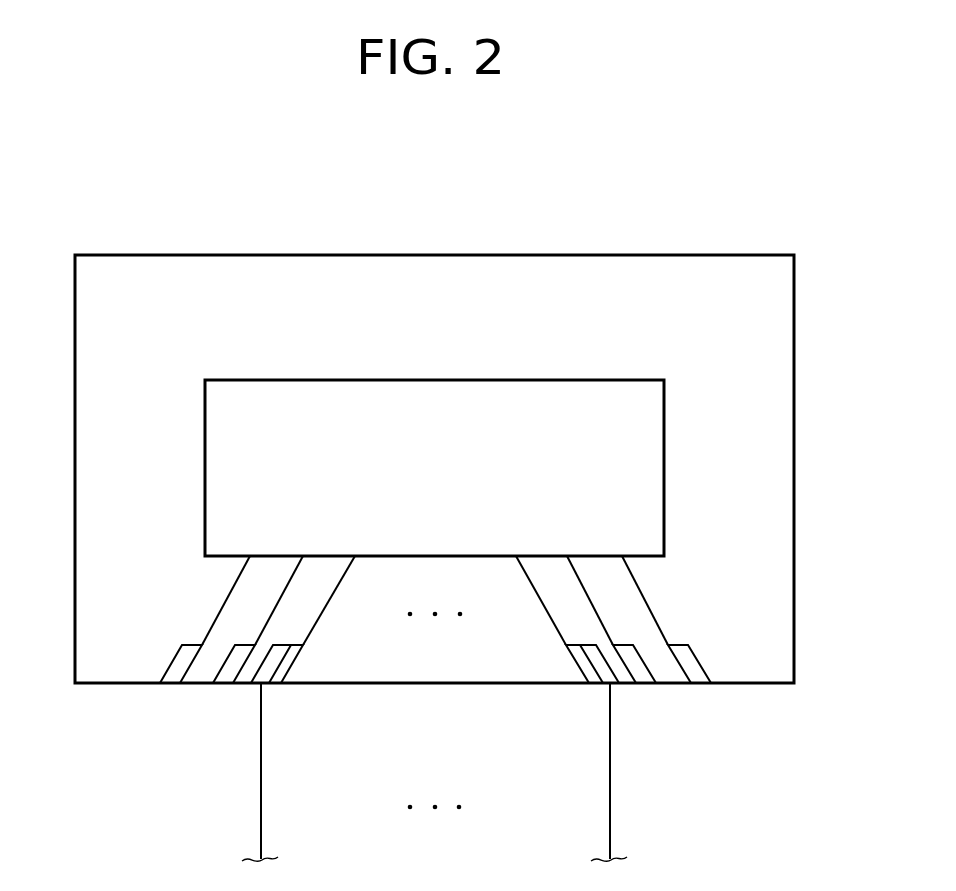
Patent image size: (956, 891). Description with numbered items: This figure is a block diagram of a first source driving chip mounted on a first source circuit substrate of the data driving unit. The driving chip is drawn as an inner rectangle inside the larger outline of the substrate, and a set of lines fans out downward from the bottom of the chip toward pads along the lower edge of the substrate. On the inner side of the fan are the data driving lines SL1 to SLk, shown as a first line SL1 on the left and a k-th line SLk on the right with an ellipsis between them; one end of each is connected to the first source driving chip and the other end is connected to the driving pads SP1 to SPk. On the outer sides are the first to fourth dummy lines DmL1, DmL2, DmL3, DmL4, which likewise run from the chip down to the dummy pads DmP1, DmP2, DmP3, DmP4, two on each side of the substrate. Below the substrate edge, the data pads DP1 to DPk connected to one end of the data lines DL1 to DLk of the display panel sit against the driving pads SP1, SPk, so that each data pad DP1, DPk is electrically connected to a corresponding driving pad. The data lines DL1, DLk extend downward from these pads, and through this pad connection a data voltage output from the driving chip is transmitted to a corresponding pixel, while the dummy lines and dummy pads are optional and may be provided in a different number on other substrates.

The first dummy line DmL1 is at (231, 590).
The second dummy line DmL2 is at (262, 619).
The third dummy line DmL3 is at (605, 618).
The fourth dummy line DmL4 is at (641, 590).
The first data driving line SL1 is at (322, 619).
The k-th data driving line SLk is at (548, 620).
The first dummy pad DmP1 is at (175, 658).
The second dummy pad DmP2 is at (222, 666).
The third dummy pad DmP3 is at (650, 669).
The fourth dummy pad DmP4 is at (698, 662).
The first data pad DP1 is at (260, 666).
The k-th data pad DPk is at (607, 666).
The first driving pad SP1 is at (291, 666).
The k-th driving pad SPk is at (581, 666).
The first data line DL1 is at (261, 806).
The k-th data line DLk is at (611, 806).